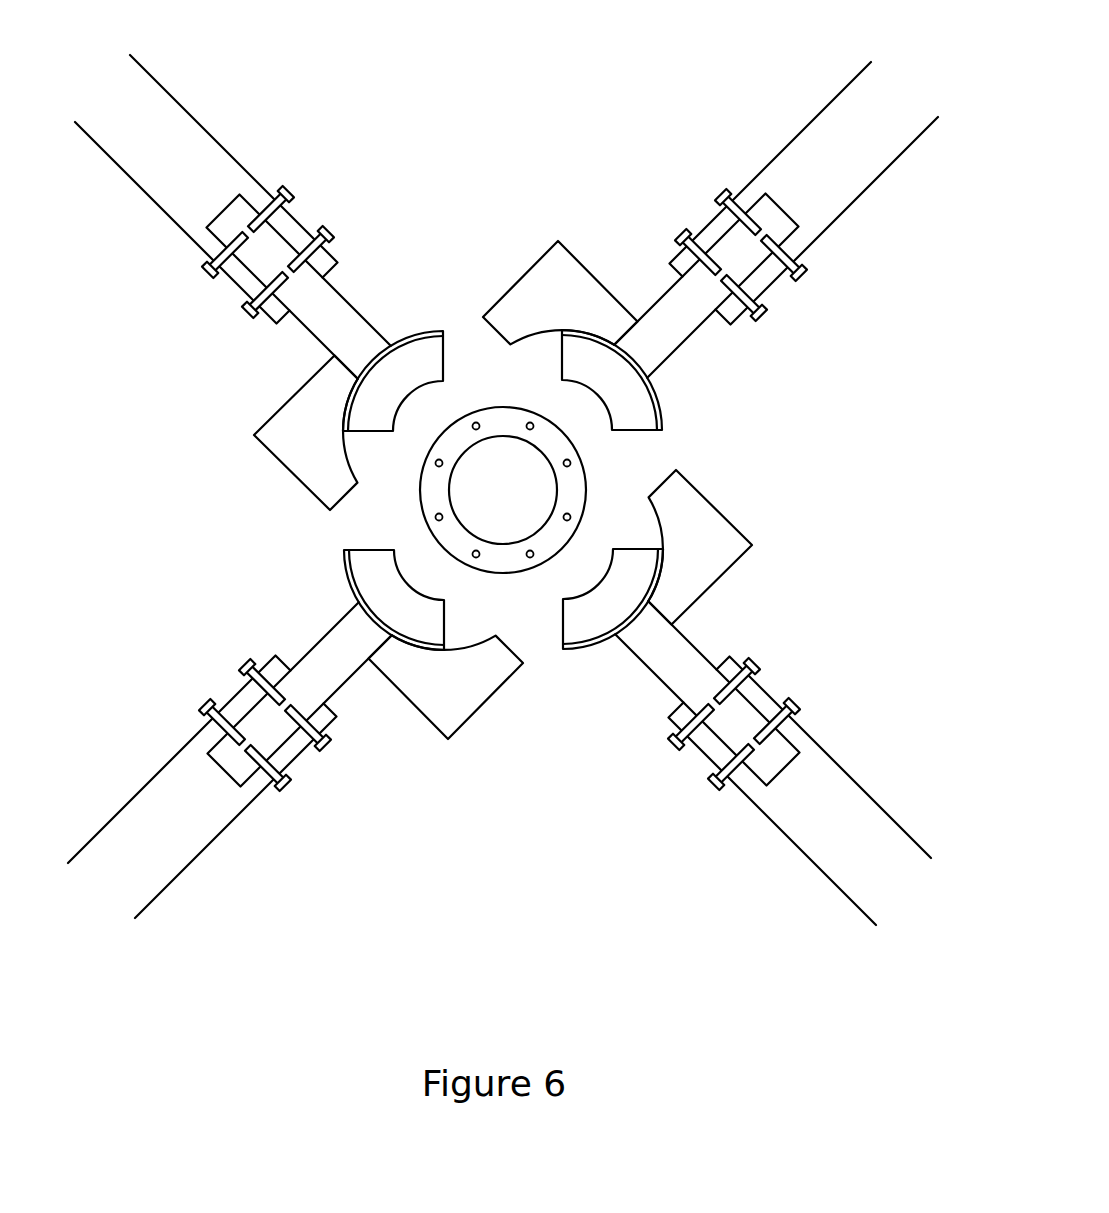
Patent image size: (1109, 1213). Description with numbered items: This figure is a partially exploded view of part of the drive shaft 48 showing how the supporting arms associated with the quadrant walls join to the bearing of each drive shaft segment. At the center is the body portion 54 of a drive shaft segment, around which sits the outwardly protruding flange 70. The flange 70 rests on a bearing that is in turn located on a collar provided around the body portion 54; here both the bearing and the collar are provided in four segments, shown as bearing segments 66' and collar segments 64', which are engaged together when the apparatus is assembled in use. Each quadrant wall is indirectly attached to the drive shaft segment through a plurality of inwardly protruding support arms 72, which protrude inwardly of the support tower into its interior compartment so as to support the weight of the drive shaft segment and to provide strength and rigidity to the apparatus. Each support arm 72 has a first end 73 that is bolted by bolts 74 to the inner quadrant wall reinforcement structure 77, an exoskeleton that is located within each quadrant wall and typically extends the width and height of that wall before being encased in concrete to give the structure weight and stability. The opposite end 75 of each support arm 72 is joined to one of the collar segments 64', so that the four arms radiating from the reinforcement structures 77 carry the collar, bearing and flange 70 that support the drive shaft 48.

The drive shaft 48 is at (540, 494).
The body portion 54 is at (476, 394).
The collar segments 64' is at (495, 489).
The bearing segments 66' is at (498, 514).
The flange 70 is at (432, 500).
The support arms 72 is at (332, 303).
The first end 73 is at (779, 190).
The bolts 74 is at (317, 233).
The opposite end 75 is at (664, 380).
The inner quadrant wall reinforcement structure 77 is at (203, 157).